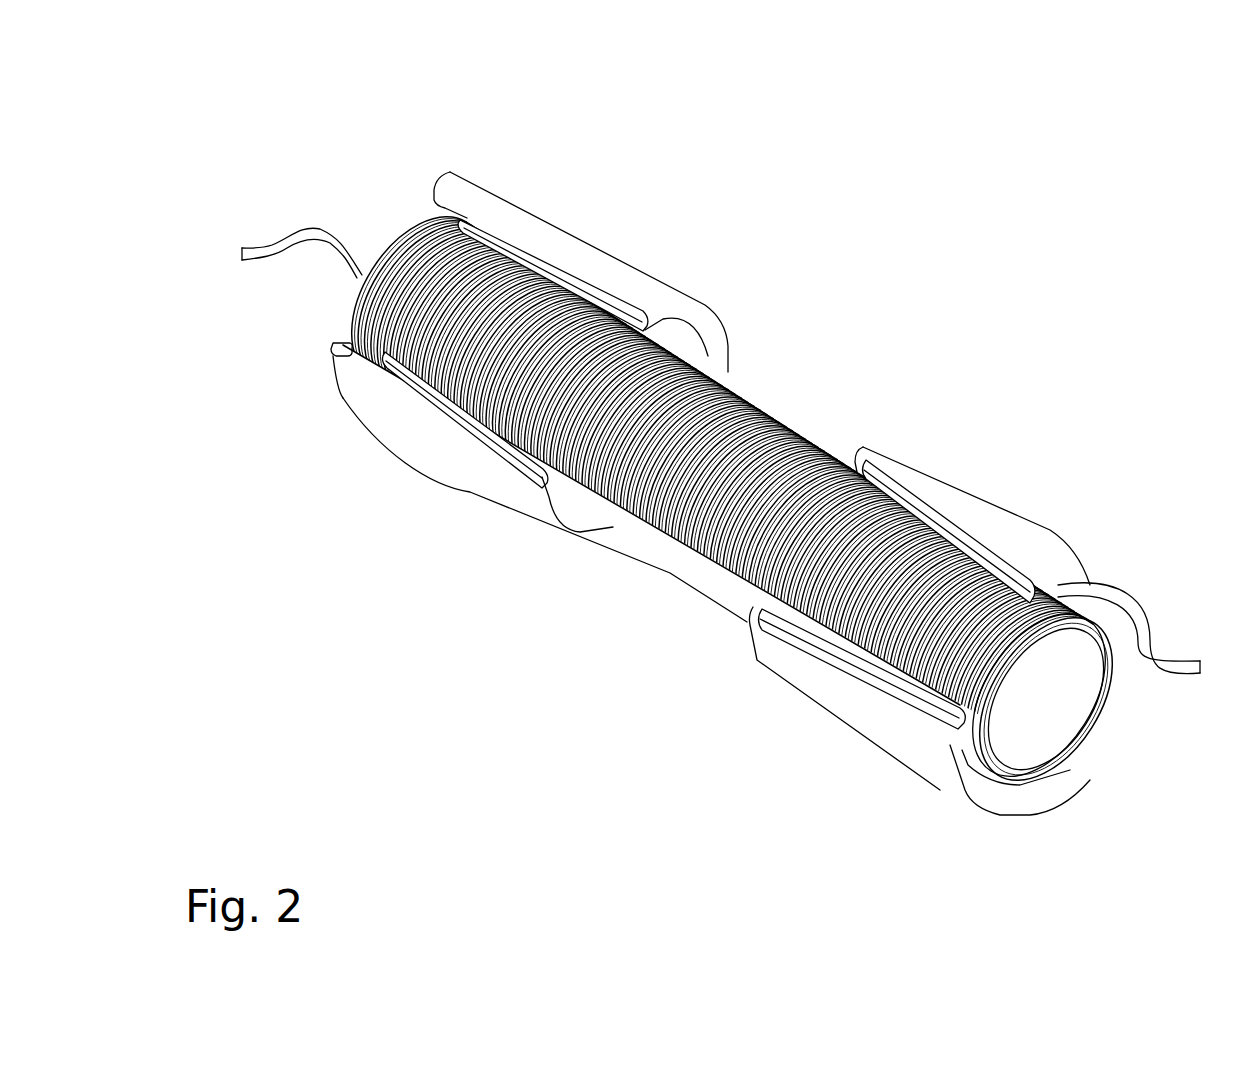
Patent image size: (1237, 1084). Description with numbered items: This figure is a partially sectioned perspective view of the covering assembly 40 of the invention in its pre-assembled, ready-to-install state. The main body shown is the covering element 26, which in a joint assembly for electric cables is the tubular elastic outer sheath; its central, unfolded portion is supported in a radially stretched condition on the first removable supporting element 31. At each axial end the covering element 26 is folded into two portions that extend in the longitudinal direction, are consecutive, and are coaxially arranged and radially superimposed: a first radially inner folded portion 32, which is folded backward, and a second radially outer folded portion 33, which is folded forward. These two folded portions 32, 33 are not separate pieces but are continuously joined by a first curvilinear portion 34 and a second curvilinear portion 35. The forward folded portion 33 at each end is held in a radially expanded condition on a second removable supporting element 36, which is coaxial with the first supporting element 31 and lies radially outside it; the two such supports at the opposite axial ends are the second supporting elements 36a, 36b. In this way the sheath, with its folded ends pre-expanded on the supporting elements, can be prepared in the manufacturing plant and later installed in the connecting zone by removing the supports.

The covering assembly 40 is at (1063, 236).
The covering element 26 is at (828, 452).
The first removable supporting element 31 is at (862, 498).
The first radially inner folded portion 32 is at (433, 392).
The second radially outer folded portion 33 is at (475, 442).
The first curvilinear portion 34 is at (335, 348).
The second curvilinear portion 35 is at (545, 493).
The second removable supporting element 36 is at (508, 458).
The second supporting element 36a is at (462, 212).
The second supporting element 36b is at (1063, 588).